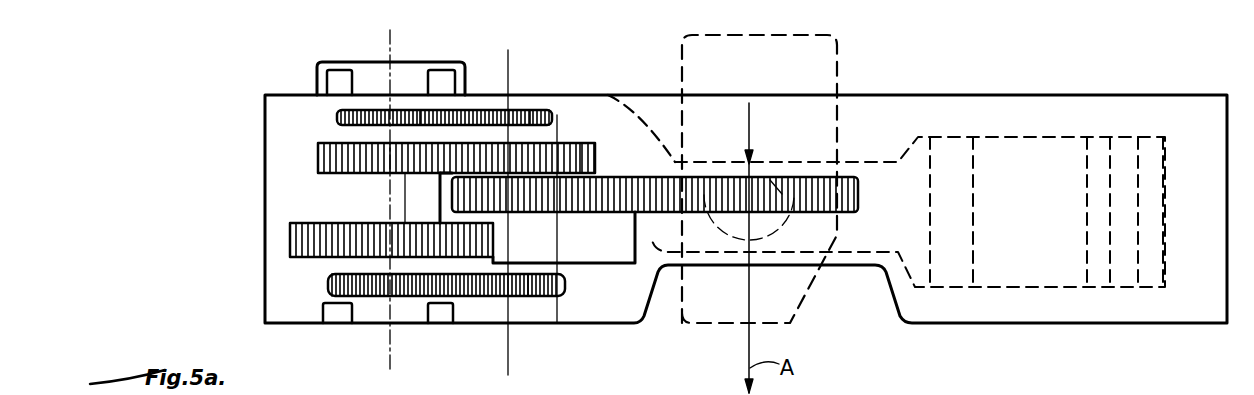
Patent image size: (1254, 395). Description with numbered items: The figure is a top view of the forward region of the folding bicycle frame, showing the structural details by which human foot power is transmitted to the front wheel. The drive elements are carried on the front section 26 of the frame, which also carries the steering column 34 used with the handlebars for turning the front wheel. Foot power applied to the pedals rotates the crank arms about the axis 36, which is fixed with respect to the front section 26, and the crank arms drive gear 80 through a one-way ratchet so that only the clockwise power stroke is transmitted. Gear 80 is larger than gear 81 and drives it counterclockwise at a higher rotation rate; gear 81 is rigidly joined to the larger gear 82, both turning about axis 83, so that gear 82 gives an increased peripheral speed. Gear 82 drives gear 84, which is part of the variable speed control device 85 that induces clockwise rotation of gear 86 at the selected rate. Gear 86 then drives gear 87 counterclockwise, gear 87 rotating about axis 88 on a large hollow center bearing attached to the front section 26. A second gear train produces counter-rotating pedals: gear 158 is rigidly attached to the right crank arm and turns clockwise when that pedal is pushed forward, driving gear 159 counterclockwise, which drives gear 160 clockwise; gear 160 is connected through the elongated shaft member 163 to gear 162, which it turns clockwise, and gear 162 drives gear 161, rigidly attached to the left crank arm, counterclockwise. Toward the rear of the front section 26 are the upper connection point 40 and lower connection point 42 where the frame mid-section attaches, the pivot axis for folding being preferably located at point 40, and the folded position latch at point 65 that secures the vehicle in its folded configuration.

The front section 26 is at (1063, 80).
The steering column 34 is at (830, 76).
The axis 36 is at (391, 335).
The upper connection point 40 is at (1158, 298).
The lower connection point 42 is at (1094, 300).
The folded position latch point 65 is at (972, 304).
The gear 80 is at (323, 258).
The gear 81 is at (440, 222).
The gear 82 is at (336, 163).
The axis 83 is at (391, 216).
The gear 84 is at (565, 143).
The variable speed control device 85 is at (620, 255).
The gear 86 is at (617, 165).
The gear 87 is at (718, 198).
The axis 88 is at (752, 125).
The gear 158 is at (337, 116).
The gear 159 is at (430, 110).
The gear 160 is at (532, 110).
The gear 161 is at (375, 297).
The gear 162 is at (528, 297).
The elongated shaft member 163 is at (508, 225).